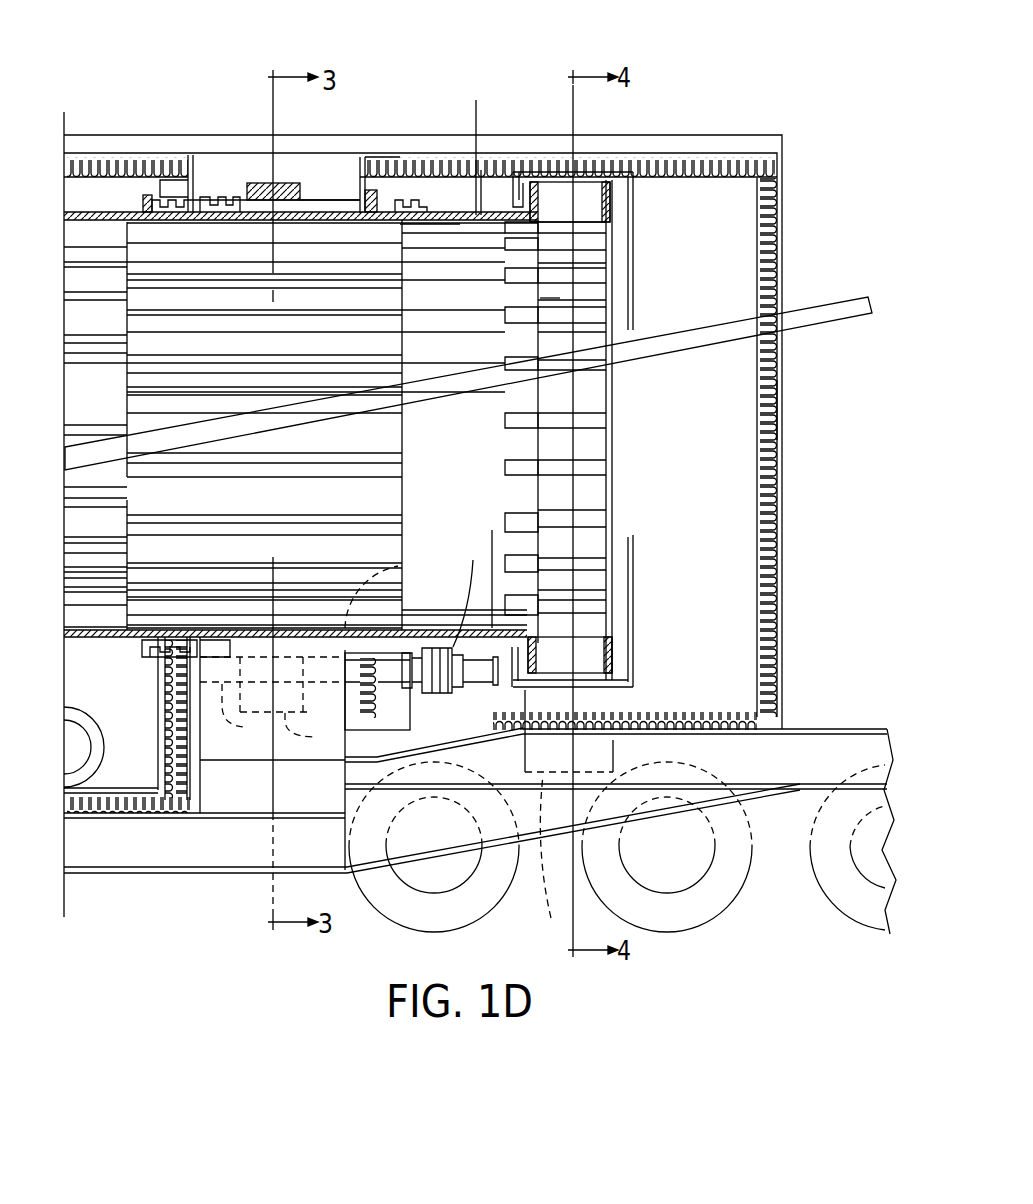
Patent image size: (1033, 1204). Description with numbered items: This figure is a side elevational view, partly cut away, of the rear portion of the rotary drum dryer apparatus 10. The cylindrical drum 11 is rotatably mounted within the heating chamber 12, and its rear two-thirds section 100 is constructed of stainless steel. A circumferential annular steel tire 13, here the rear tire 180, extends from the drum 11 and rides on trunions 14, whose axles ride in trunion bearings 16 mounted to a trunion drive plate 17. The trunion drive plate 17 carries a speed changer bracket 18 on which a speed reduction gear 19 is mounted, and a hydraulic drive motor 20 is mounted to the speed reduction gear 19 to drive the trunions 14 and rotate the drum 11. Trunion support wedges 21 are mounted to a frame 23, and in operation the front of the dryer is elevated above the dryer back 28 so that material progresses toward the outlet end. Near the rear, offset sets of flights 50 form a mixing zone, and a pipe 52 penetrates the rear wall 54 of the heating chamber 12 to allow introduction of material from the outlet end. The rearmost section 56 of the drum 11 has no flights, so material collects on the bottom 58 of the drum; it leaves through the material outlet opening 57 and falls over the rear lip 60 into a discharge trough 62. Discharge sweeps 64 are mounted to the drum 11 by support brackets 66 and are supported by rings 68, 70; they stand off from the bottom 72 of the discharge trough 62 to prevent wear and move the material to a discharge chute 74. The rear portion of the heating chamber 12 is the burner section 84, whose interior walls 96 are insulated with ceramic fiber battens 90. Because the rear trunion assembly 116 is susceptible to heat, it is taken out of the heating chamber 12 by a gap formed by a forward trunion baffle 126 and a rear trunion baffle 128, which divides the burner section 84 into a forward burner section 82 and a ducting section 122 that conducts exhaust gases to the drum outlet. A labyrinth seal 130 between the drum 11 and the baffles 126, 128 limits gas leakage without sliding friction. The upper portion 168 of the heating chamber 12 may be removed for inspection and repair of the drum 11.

The rotary drum dryer apparatus 10 is at (249, 88).
The cylindrical drum 11 is at (472, 138).
The heating chamber 12 is at (140, 143).
The annular steel tires 13 is at (303, 190).
The trunions 14 is at (238, 716).
The trunion bearings 16 is at (372, 572).
The trunion drive plate 17 is at (375, 733).
The speed changer bracket 18 is at (410, 712).
The speed reduction gear 19 is at (464, 591).
The hydraulic drive motor 20 is at (468, 684).
The trunion support wedges 21 is at (240, 750).
The frame 23 is at (225, 858).
The dryer back 28 is at (800, 408).
The flights 50 is at (403, 340).
The pipe 52 is at (832, 300).
The rear wall 54 is at (740, 447).
The rearmost section 56 is at (453, 223).
The material outlet opening 57 is at (545, 302).
The bottom of the drum 58 is at (487, 565).
The rear lip 60 is at (545, 633).
The discharge trough 62 is at (590, 688).
The discharge sweeps 64 is at (598, 297).
The support brackets 66 is at (513, 463).
The ring 68 is at (540, 195).
The ring 70 is at (608, 188).
The bottom of the discharge trough 72 is at (608, 690).
The discharge chute 74 is at (625, 818).
The forward burner section 82 is at (101, 805).
The burner section 84 is at (95, 157).
The ceramic fiber battens 90 is at (118, 160).
The interior walls 96 is at (137, 782).
The rear two-thirds section 100 is at (497, 217).
The rear trunion assembly 116 is at (290, 166).
The ducting section 122 is at (482, 170).
The forward trunion baffle 126 is at (197, 197).
The rear trunion baffle 128 is at (393, 173).
The labyrinth seal 130 is at (197, 200).
The upper portion of the heating chamber 168 is at (153, 160).
The rear tire 180 is at (305, 192).